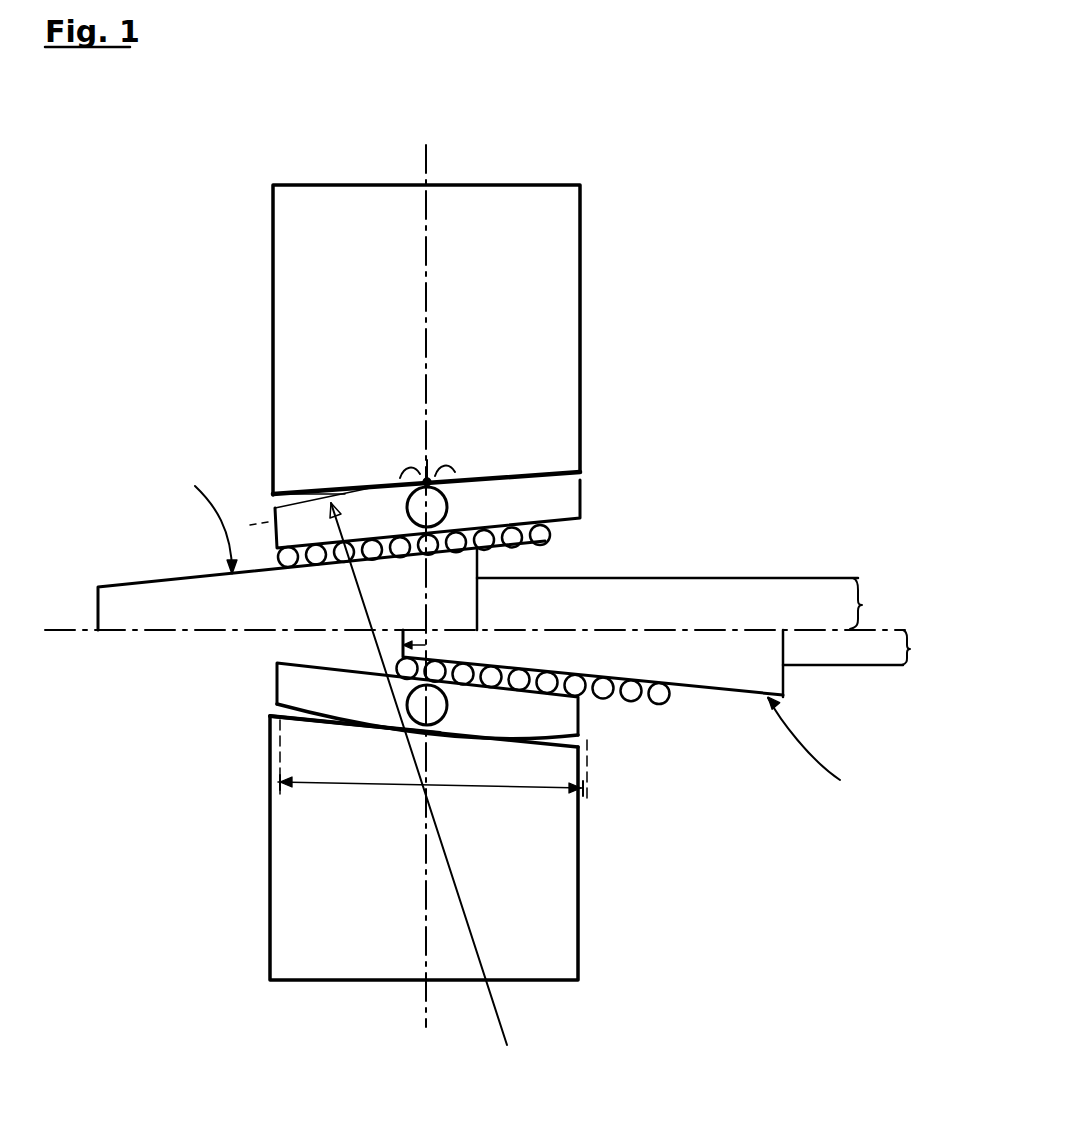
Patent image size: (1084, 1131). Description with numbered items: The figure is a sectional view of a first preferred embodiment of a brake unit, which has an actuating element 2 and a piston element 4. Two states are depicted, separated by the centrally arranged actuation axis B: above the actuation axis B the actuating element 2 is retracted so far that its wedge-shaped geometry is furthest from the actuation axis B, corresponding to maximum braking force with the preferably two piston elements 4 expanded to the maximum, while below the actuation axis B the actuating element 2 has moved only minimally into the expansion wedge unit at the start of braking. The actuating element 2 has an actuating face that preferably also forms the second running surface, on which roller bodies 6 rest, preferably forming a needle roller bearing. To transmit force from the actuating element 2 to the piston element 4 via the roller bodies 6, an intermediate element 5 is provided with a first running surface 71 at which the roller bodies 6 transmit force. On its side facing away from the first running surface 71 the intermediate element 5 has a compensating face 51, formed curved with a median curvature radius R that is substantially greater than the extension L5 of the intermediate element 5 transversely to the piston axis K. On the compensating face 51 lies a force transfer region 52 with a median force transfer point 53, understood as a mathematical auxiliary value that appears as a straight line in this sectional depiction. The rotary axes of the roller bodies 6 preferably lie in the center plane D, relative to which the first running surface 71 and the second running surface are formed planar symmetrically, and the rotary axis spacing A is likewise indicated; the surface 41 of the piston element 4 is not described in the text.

The actuating element 2 is at (800, 602).
The piston element 4 is at (563, 313).
The intermediate element 5 is at (567, 495).
The roller bodies 6 is at (552, 547).
The support surface of lower block 41 is at (282, 712).
The compensating face 51 is at (565, 474).
The force transfer region 52 is at (427, 480).
The median force transfer point 53 is at (427, 480).
The first running surface 71 is at (307, 663).
The piston axis K is at (428, 248).
The rotary axis spacing A is at (570, 668).
The actuation axis B is at (145, 633).
The center plane D is at (698, 700).
The median curvature radius R is at (503, 1012).
The extension of the intermediate element L5 is at (515, 787).